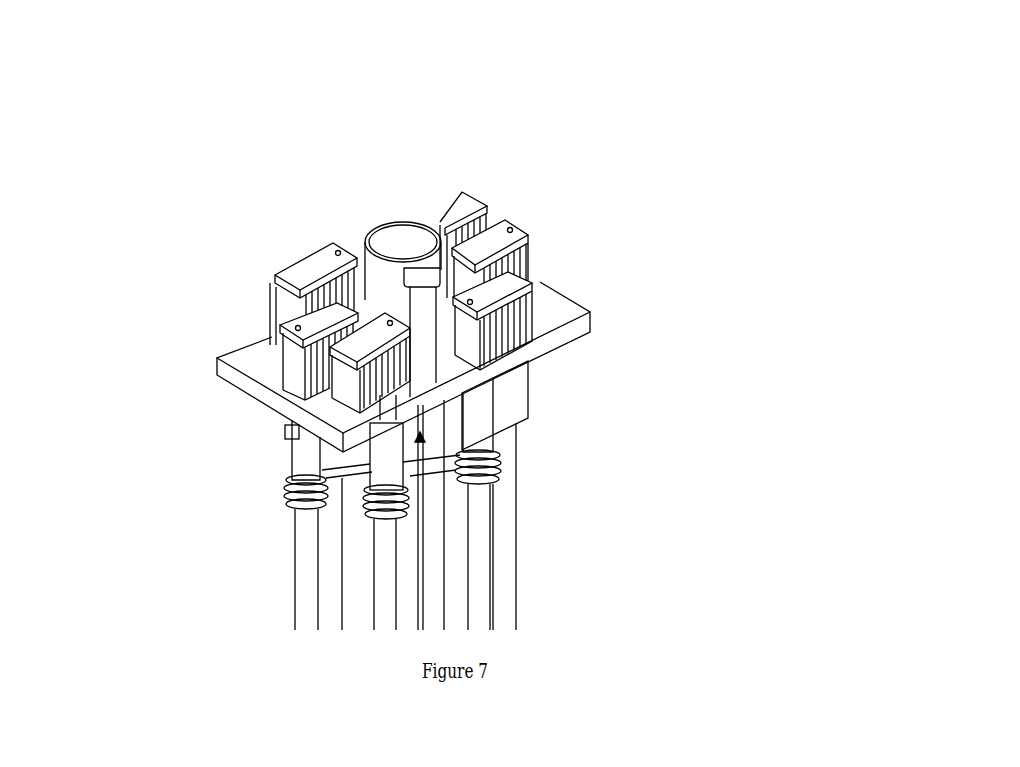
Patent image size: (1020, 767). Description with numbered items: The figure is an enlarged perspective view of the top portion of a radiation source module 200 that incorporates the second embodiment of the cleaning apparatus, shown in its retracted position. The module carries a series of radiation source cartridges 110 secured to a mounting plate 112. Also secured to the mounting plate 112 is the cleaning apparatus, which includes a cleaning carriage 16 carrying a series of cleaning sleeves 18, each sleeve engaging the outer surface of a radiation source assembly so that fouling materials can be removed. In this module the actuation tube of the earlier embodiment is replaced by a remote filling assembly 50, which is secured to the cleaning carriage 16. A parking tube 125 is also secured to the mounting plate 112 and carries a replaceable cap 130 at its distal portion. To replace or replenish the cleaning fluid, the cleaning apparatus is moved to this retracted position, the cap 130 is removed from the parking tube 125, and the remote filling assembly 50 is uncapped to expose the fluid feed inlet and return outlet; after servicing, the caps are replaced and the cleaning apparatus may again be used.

The radiation source module 200 is at (520, 118).
The radiation source cartridge 110 is at (296, 270).
The replaceable cap 130 is at (415, 268).
The parking tube 125 is at (432, 317).
The mounting plate 112 is at (563, 317).
The cleaning sleeve 18 is at (290, 493).
The remote filling assembly 50 is at (380, 505).
The cleaning carriage 16 is at (437, 458).